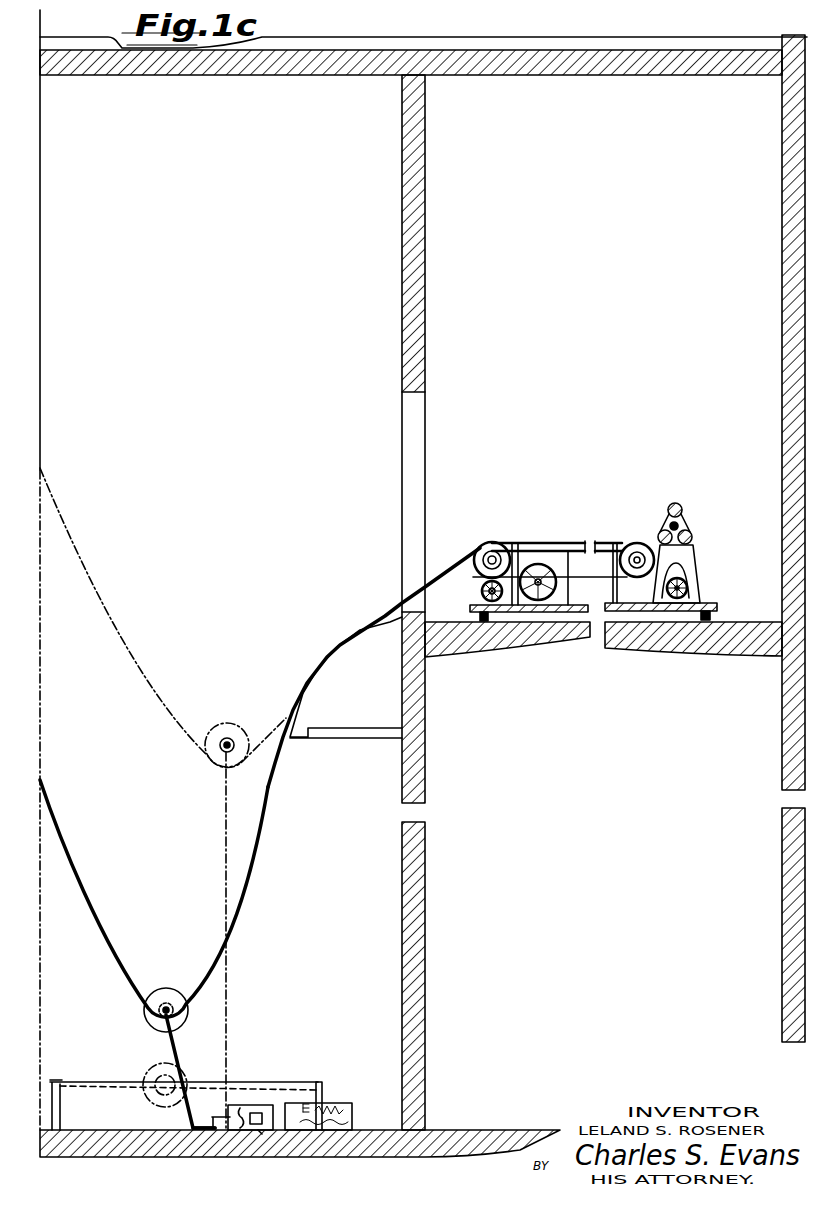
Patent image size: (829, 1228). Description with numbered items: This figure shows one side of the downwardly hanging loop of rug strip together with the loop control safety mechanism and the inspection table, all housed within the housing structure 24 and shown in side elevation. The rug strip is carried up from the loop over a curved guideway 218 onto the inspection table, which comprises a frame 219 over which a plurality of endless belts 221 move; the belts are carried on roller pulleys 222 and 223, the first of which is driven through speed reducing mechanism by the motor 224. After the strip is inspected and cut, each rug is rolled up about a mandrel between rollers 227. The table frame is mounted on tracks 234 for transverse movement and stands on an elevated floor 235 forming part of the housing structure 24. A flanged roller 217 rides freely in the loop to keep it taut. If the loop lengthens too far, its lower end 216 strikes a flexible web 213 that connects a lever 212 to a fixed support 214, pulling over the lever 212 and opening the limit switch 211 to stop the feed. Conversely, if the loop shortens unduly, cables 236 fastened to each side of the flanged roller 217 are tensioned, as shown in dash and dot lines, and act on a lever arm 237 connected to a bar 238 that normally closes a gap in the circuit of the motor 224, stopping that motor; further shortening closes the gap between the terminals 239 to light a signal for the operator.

The housing structure 24 is at (425, 120).
The limit switch 211 is at (351, 1122).
The lever 212 is at (324, 1088).
The flexible web 213 is at (233, 1081).
The fixed support 214 is at (60, 1103).
The lower end of the loop 216 is at (133, 1004).
The flanged roller 217 is at (169, 998).
The curved guideway 218 is at (327, 658).
The frame 219 is at (568, 551).
The endless belts 221 is at (566, 582).
The roller pulley 222 is at (480, 561).
The roller pulley 223 is at (638, 543).
The motor 224 is at (481, 593).
The rollers 227 is at (690, 531).
The tracks 234 is at (487, 623).
The elevated floor 235 is at (763, 611).
The cable 236 is at (222, 848).
The lever arm 237 is at (221, 1130).
The bar 238 is at (260, 1132).
The terminals 239 is at (243, 1110).